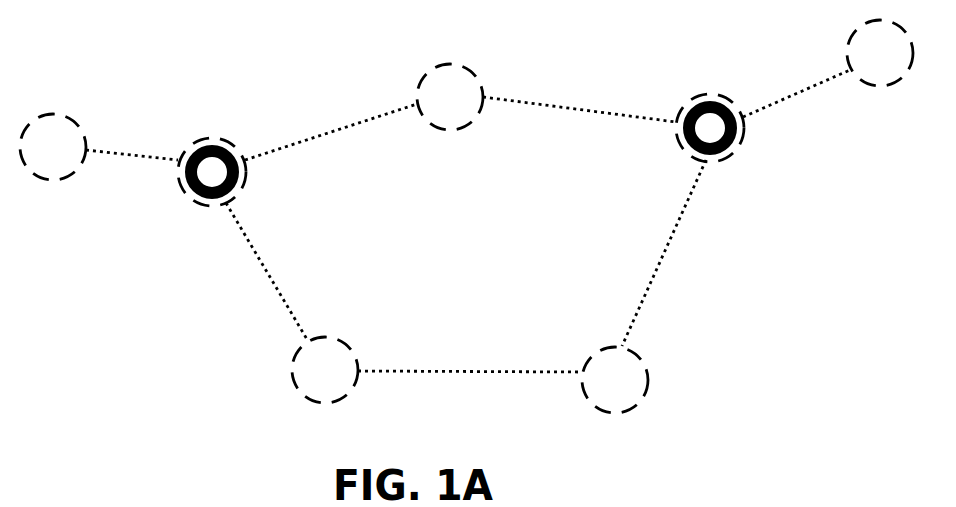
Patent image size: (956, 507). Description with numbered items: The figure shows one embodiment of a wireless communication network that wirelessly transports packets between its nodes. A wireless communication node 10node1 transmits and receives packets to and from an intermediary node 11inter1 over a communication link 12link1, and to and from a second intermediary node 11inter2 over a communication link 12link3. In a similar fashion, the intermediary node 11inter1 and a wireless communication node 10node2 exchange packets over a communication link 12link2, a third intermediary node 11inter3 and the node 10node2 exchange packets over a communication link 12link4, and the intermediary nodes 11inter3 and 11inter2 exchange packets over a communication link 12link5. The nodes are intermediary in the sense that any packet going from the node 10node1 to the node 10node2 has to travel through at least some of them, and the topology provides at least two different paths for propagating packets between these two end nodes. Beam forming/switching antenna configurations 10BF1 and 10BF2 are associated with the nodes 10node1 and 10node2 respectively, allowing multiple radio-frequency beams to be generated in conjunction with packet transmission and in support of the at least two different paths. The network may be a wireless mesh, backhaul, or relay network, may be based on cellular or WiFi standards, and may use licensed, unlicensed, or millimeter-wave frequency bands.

The beam forming/switching antenna configuration 10BF1 is at (205, 138).
The wireless communication node 10node1 is at (200, 203).
The intermediary node 11inter1 is at (418, 84).
The communication link 12link1 is at (327, 133).
The communication link 12link2 is at (591, 111).
The wireless communication node 10node2 is at (681, 147).
The beam forming/switching antenna configuration 10BF2 is at (726, 150).
The communication link 12link3 is at (270, 280).
The intermediary node 11inter2 is at (300, 390).
The communication link 12link5 is at (507, 370).
The intermediary node 11inter3 is at (587, 400).
The communication link 12link4 is at (654, 275).